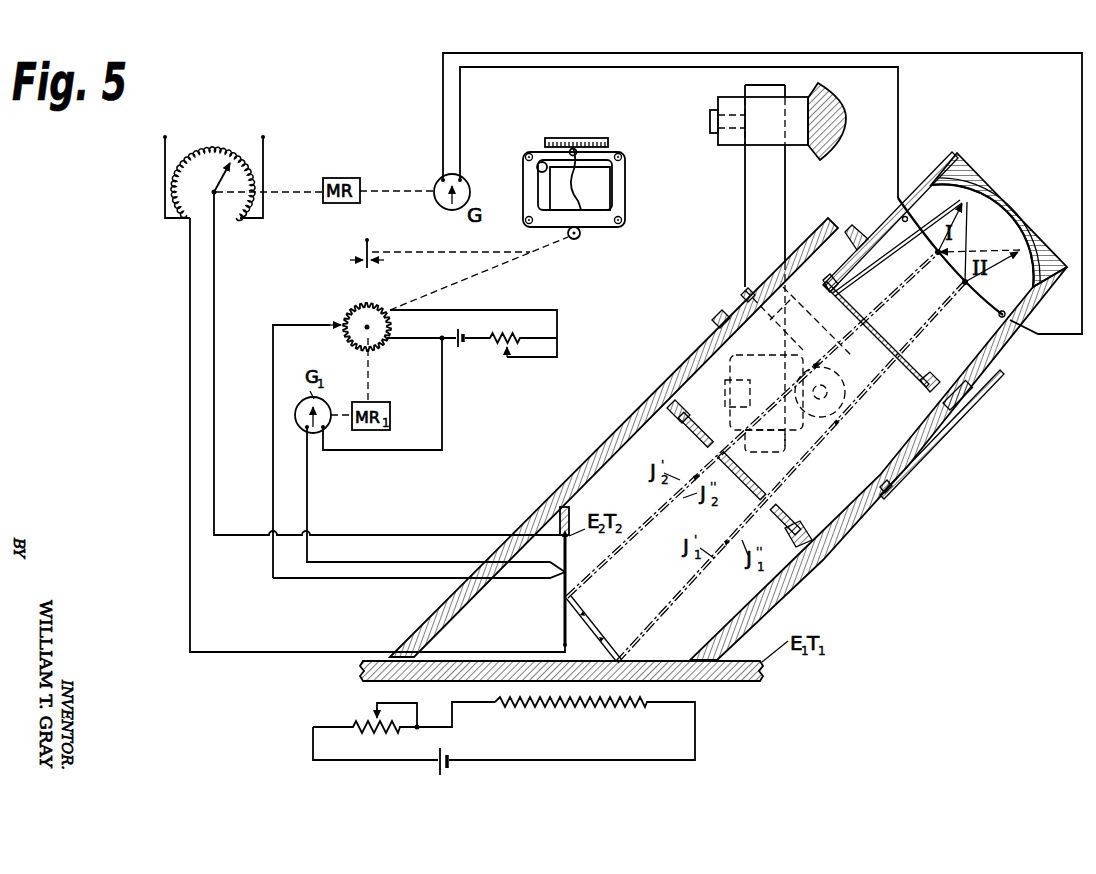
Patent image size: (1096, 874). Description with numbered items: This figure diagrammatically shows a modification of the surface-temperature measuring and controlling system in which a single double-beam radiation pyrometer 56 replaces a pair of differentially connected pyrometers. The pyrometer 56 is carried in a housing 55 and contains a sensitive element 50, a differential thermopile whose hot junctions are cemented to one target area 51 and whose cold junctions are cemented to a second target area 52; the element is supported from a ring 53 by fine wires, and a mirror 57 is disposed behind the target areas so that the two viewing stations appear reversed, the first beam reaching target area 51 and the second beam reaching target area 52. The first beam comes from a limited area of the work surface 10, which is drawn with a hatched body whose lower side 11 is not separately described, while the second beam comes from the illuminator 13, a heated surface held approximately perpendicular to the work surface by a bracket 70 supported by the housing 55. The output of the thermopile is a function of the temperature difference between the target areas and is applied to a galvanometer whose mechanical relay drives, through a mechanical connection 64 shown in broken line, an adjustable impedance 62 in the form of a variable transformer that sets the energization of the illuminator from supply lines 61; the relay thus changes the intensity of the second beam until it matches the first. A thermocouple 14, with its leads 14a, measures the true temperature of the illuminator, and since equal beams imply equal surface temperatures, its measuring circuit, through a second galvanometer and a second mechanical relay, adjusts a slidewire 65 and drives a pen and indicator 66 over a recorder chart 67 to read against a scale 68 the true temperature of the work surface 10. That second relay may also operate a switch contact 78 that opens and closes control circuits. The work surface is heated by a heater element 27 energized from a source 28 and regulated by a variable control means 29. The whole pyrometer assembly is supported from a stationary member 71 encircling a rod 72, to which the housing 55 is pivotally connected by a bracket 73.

The work surface 10 is at (742, 661).
The plate lower surface 11 is at (733, 679).
The illuminator 13 is at (568, 555).
The thermocouple 14 is at (560, 575).
The lead wire 14a is at (378, 564).
The heater element 27 is at (589, 704).
The source 28 is at (450, 768).
The variable control means 29 is at (375, 714).
The sensitive element 50 is at (990, 299).
The target area 51 is at (936, 256).
The target area 52 is at (961, 282).
The ring 53 is at (1003, 320).
The housing 55 is at (842, 523).
The radiation pyrometer 56 is at (989, 454).
The mirror 57 is at (960, 183).
The supply lines 61 is at (163, 149).
The adjustable impedance 62 is at (221, 157).
The mechanical connection 64 is at (311, 196).
The slidewire 65 is at (354, 305).
The pen and indicator 66 is at (573, 143).
The recorder chart 67 is at (612, 190).
The scale 68 is at (608, 139).
The bracket 70 is at (571, 519).
The stationary member 71 is at (798, 148).
The rod 72 is at (747, 170).
The bracket 73 is at (730, 372).
The switch contact 78 is at (364, 247).